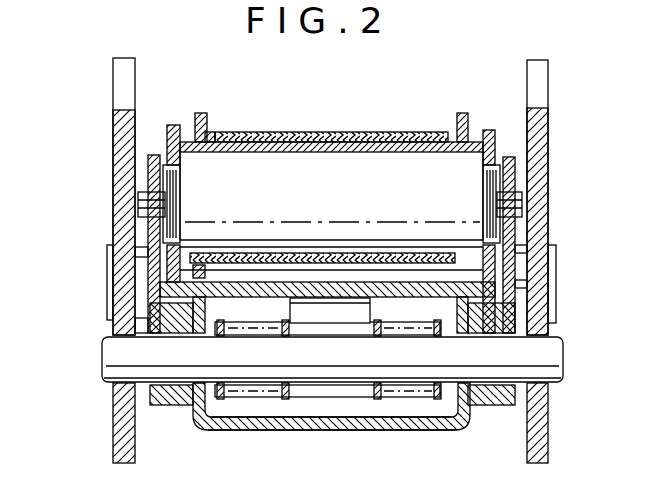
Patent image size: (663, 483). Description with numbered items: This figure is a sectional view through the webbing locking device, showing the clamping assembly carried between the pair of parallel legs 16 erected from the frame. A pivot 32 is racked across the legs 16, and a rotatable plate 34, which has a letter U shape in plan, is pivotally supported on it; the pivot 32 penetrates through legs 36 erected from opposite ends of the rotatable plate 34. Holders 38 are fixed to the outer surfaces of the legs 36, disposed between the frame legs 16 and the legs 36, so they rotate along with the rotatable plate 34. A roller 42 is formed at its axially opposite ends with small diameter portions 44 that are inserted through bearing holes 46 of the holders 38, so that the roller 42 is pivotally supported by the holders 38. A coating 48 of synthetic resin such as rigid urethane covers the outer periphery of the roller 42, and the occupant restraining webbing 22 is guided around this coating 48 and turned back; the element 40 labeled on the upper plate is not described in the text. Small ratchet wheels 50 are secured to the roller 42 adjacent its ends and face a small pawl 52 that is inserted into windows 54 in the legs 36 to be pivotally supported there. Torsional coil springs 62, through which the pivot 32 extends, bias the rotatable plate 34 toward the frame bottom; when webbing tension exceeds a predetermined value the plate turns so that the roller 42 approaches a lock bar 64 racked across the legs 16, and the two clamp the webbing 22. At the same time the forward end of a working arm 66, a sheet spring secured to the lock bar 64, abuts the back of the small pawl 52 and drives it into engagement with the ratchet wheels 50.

The legs 16 is at (113, 113).
The occupant restraining webbing 22 is at (383, 132).
The pivot 32 is at (120, 358).
The rotatable plate 34 is at (312, 431).
The legs 36 is at (199, 113).
The holders 38 is at (148, 160).
The top plate 40 is at (215, 132).
The roller 42 is at (312, 165).
The small diameter portions 44 is at (145, 205).
The bearing holes 46 is at (152, 190).
The coating 48 is at (275, 134).
The small ratchet wheels 50 is at (167, 125).
The small pawl 52 is at (265, 323).
The windows 54 is at (207, 290).
The torsional coil springs 62 is at (218, 416).
The lock bar 64 is at (107, 300).
The working arm 66 is at (325, 308).